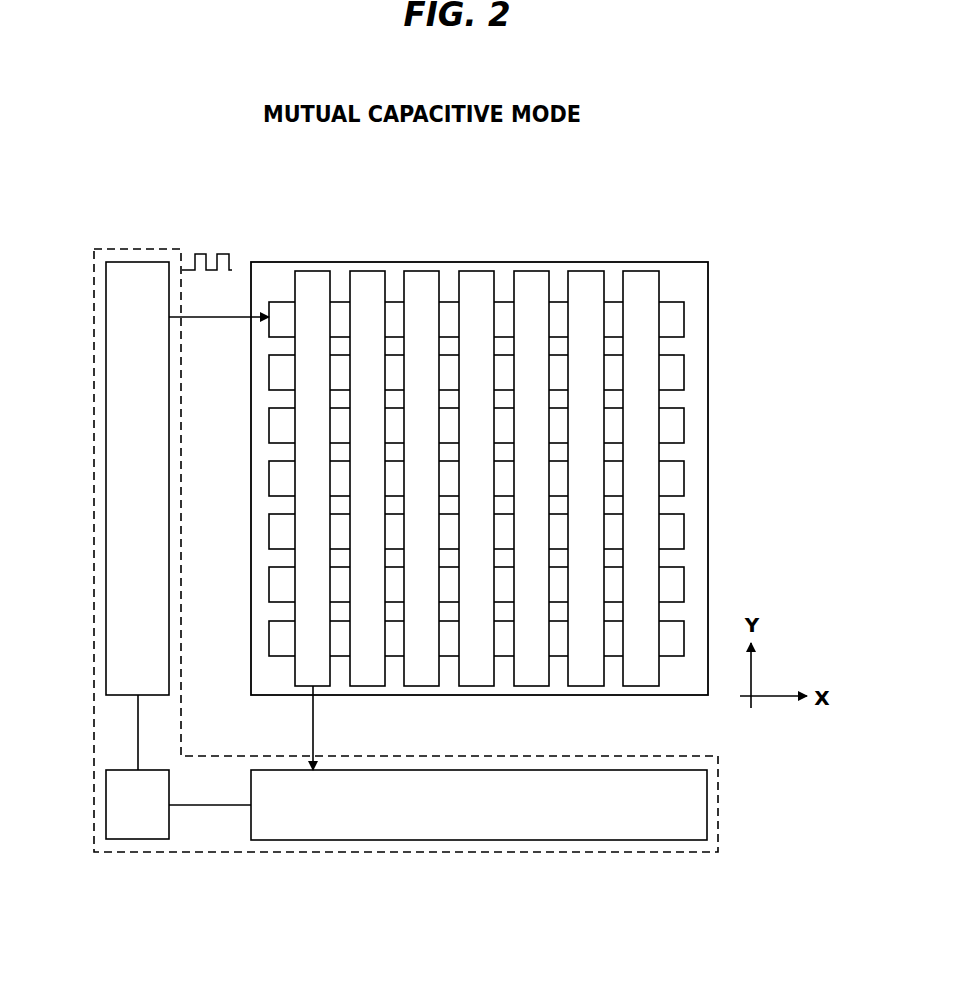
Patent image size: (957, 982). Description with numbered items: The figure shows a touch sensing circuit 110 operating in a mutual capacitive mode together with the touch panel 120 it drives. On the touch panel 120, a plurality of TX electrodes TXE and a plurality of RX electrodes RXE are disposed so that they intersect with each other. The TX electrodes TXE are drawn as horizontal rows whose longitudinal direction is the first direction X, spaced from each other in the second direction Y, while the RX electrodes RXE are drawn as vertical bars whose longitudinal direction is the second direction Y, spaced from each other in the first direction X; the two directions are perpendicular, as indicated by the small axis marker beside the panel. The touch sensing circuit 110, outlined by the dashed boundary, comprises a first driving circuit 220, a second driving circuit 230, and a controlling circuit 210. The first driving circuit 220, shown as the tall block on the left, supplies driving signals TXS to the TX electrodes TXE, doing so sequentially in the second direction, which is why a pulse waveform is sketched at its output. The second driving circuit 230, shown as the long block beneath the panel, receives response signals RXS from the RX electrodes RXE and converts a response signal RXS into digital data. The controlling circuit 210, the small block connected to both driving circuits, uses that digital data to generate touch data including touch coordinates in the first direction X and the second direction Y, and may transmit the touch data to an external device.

The touch sensing circuit 110 is at (272, 853).
The touch panel 120 is at (519, 440).
The controlling circuit 210 is at (147, 839).
The first driving circuit 220 is at (138, 262).
The second driving circuit 230 is at (495, 841).
The TX electrodes TXE is at (684, 318).
The RX electrodes RXE is at (313, 271).
The driving signals TXS is at (219, 285).
The response signals RXS is at (342, 728).